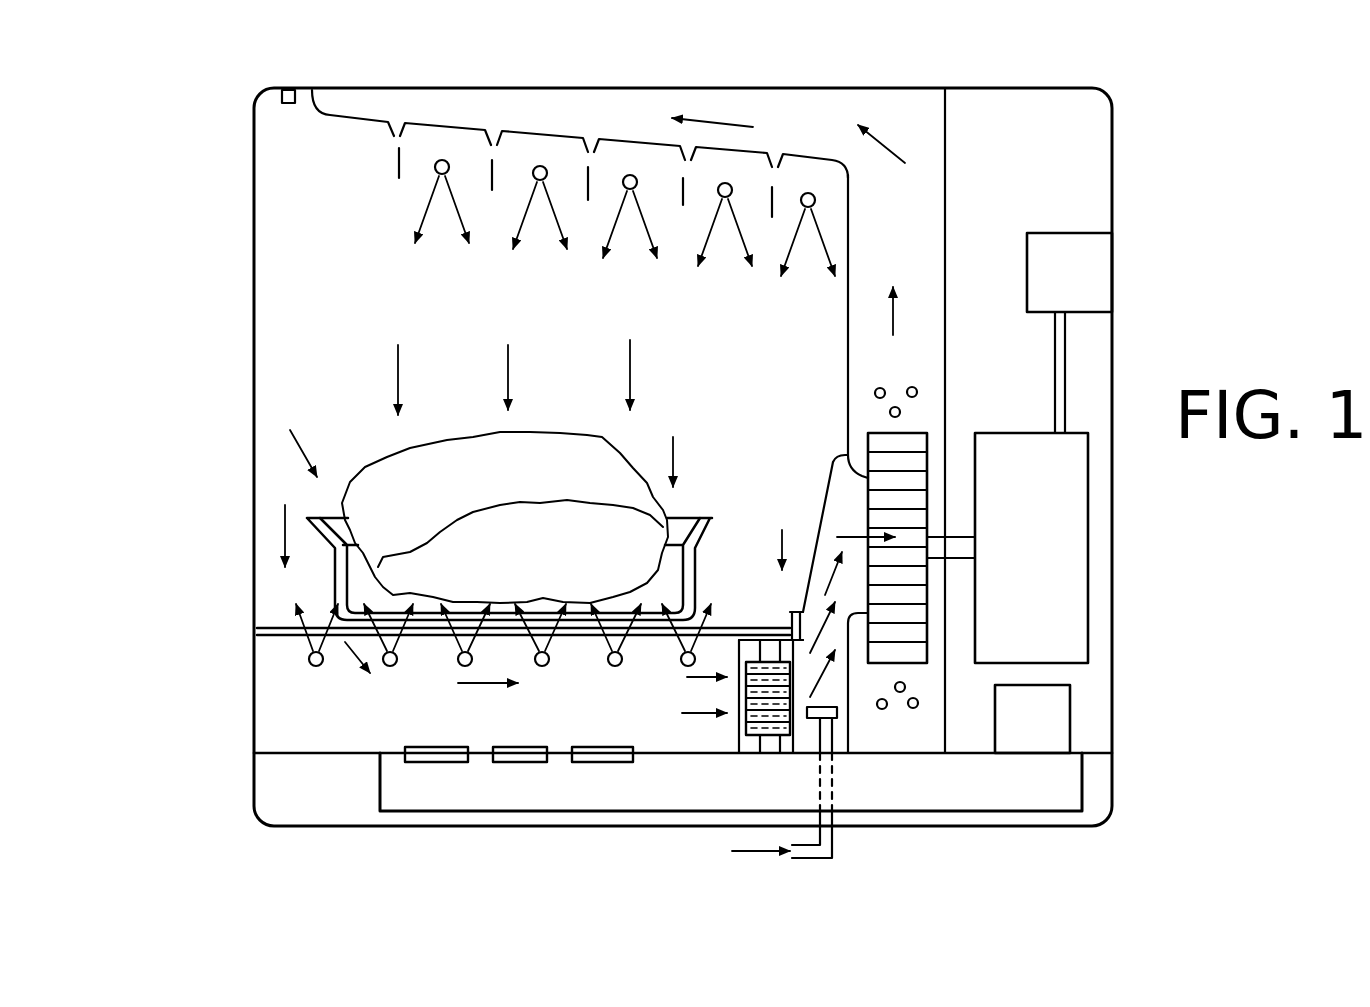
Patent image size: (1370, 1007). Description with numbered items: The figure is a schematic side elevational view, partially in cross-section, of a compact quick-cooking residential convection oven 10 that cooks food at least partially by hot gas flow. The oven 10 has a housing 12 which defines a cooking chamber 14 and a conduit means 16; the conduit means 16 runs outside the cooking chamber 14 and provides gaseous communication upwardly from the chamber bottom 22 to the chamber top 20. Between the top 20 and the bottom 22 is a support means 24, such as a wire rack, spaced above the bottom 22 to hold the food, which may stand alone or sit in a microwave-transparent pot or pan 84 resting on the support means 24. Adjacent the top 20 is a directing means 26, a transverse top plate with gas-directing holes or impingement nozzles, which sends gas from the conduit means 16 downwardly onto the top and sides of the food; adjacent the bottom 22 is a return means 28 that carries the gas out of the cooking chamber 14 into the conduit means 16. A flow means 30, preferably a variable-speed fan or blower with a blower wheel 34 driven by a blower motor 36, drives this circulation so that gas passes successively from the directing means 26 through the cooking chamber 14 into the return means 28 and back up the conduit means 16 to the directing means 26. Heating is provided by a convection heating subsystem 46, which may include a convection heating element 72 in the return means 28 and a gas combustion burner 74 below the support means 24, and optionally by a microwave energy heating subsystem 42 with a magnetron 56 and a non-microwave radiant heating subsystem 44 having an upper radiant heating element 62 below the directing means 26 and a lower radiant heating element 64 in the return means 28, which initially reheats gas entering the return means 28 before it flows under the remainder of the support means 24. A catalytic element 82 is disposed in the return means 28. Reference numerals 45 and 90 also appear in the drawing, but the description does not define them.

The oven 10 is at (380, 73).
The housing 12 is at (1115, 292).
The cooking chamber 14 is at (605, 340).
The conduit means 16 is at (918, 237).
The top 20 is at (512, 90).
The bottom 22 is at (660, 753).
The support means 24 is at (262, 633).
The directing means 26 is at (687, 170).
The return means 28 is at (465, 725).
The flow means 30 is at (1093, 615).
The blower wheel 34 is at (930, 452).
The blower motor 36 is at (1055, 520).
The microwave energy heating subsystem 42 is at (851, 775).
The non-microwave radiant heating subsystem 44 is at (565, 443).
The lower heating elements 45 is at (593, 763).
The convection heating subsystem 46 is at (911, 621).
The magnetron 56 is at (1050, 706).
The upper radiant heating element 62 is at (535, 180).
The lower radiant heating element 64 is at (685, 667).
The convection heating element 72 is at (908, 388).
The gas combustion burner 74 is at (838, 712).
The catalytic element 82 is at (747, 727).
The pot or pan 84 is at (708, 525).
The indicator light 90 is at (289, 103).